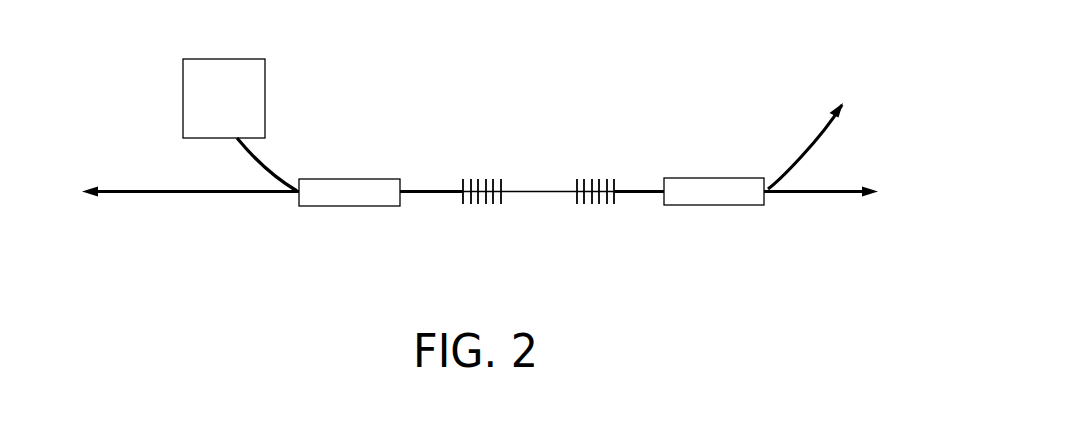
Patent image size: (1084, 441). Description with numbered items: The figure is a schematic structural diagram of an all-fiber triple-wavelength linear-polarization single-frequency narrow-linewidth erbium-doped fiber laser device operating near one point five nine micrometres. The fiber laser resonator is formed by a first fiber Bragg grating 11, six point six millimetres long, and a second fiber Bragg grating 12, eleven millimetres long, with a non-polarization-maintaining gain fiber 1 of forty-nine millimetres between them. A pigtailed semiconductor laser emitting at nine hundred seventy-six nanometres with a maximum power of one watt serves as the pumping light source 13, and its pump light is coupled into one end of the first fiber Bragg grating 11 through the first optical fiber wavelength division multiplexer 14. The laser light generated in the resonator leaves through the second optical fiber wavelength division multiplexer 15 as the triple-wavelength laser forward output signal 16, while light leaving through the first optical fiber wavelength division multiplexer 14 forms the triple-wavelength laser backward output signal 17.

The non-polarization-maintaining gain fiber 1 is at (532, 221).
The first fiber Bragg grating 11 is at (482, 166).
The second fiber Bragg grating 12 is at (595, 166).
The pumping light source 13 is at (224, 75).
The first optical fiber wavelength division multiplexer 14 is at (349, 218).
The second optical fiber wavelength division multiplexer 15 is at (714, 223).
The triple-wavelength laser forward output signal 16 is at (854, 179).
The triple-wavelength laser backward output signal 17 is at (170, 197).